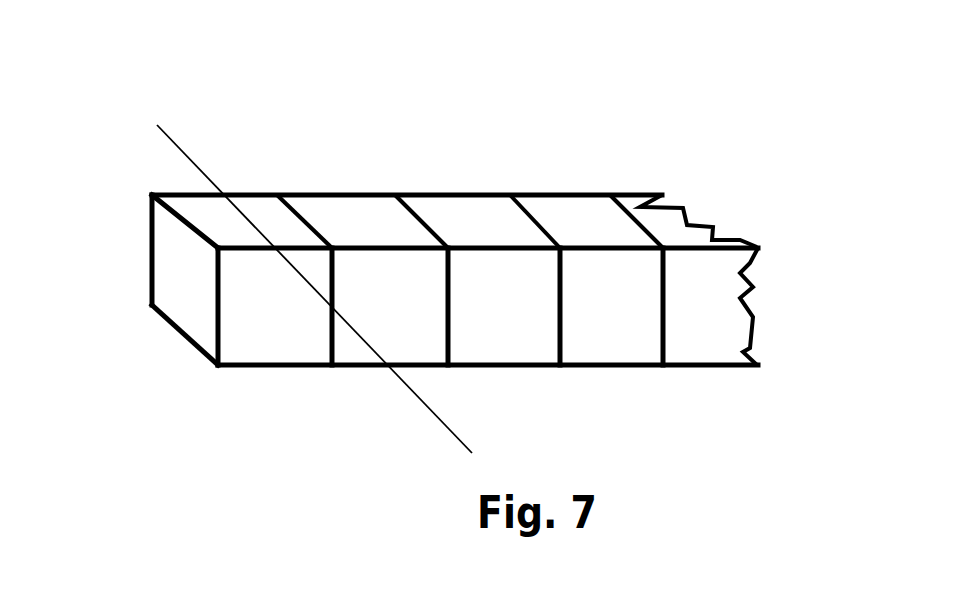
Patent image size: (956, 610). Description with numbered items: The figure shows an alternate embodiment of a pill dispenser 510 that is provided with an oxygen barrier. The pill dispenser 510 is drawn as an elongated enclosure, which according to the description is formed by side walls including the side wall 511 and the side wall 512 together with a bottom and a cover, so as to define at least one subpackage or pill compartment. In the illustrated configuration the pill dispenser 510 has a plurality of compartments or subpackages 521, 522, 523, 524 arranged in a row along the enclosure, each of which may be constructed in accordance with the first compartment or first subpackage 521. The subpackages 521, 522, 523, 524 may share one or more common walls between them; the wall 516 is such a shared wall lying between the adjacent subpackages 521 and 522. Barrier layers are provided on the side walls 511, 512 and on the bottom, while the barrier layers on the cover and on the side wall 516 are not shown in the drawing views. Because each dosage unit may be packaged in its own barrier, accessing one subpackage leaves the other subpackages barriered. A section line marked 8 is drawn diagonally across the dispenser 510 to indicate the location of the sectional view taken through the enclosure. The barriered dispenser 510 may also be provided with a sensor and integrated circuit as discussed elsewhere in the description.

The pill dispenser 510 is at (288, 87).
The side wall 511 is at (278, 338).
The side wall 512 is at (188, 307).
The side wall 516 is at (340, 285).
The first subpackage 521 is at (198, 208).
The subpackage 522 is at (346, 210).
The subpackage 523 is at (465, 208).
The subpackage 524 is at (568, 210).
The section line 8- 8 is at (183, 150).